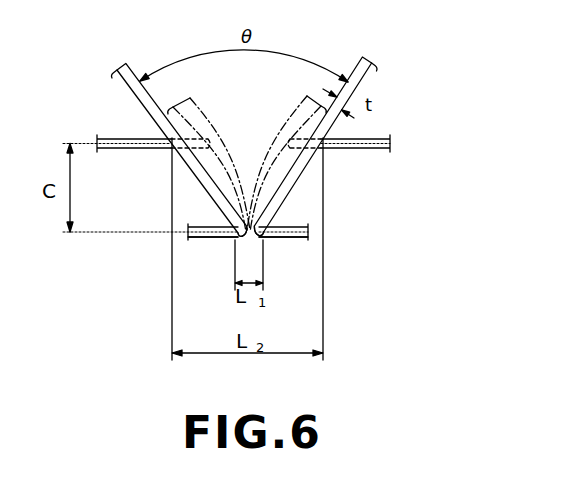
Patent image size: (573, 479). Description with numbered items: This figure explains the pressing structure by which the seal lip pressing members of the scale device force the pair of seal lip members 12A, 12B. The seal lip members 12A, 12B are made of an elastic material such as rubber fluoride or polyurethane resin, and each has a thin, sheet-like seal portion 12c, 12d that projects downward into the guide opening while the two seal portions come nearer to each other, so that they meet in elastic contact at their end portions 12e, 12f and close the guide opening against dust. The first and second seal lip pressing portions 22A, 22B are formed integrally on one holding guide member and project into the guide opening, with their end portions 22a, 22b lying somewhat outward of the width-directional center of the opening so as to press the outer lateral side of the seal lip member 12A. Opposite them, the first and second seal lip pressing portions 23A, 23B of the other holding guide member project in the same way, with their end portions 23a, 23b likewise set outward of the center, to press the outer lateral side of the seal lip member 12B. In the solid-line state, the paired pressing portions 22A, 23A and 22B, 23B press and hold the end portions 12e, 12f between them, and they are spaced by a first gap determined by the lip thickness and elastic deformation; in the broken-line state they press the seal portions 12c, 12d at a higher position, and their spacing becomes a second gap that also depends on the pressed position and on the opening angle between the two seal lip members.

The seal lip member 12A is at (136, 84).
The seal lip member 12B is at (370, 70).
The seal portion 12c is at (163, 124).
The seal portion 12d is at (358, 87).
The end portion 12e is at (237, 240).
The end portion 12f is at (258, 240).
The first seal lip pressing portion 22A is at (129, 261).
The second seal lip pressing portion 22B is at (129, 261).
The end portion 22a is at (228, 243).
The end portion 22b is at (169, 268).
The first seal lip pressing portion 23A is at (332, 240).
The second seal lip pressing portion 23B is at (367, 240).
The end portion 23a is at (268, 241).
The end portion 23b is at (329, 262).